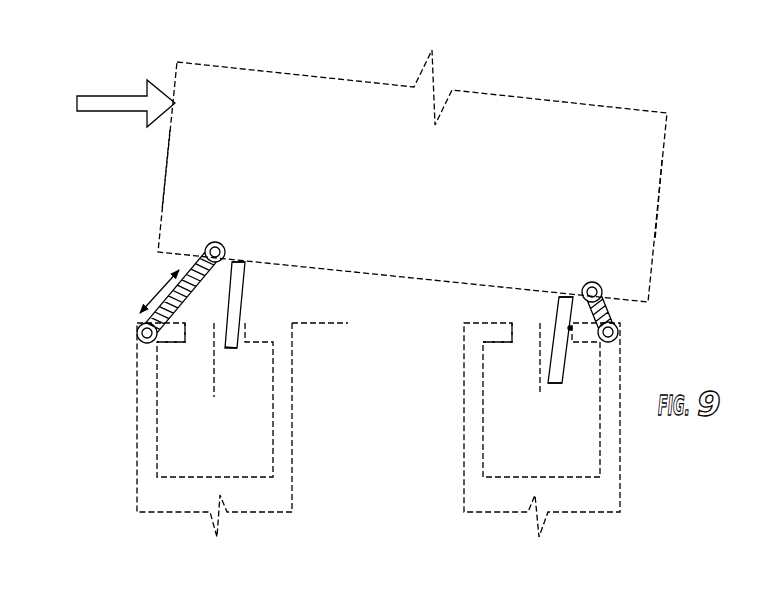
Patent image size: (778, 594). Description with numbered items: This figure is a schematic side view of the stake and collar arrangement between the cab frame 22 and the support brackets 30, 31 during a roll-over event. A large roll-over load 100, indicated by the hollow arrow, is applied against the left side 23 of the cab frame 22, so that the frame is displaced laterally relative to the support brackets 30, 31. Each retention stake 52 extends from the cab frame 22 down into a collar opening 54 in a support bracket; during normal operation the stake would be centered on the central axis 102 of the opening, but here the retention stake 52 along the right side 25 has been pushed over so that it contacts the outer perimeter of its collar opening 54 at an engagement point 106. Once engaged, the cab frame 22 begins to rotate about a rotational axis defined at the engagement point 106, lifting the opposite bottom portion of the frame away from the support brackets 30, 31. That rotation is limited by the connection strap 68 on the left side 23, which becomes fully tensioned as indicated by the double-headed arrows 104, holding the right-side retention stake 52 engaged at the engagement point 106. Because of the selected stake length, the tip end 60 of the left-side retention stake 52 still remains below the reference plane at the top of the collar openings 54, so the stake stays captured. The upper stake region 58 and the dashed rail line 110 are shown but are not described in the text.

The roll-over load 100 is at (114, 100).
The cab frame 22 is at (416, 195).
The left side of the cab frame 23 is at (162, 193).
The right side of the cab frame 25 is at (658, 203).
The connection strap 68 is at (201, 250).
The retention stake 52 is at (250, 300).
The upper end of bar 58 is at (243, 262).
The tip end 60 is at (232, 352).
The arrows indicating strap tension 104 is at (155, 293).
The support bracket 30 is at (133, 445).
The support bracket 31 is at (627, 457).
The collar opening 54 is at (200, 340).
The central axis of the collar opening 102 is at (212, 377).
The rail 110 is at (315, 325).
The engagement point 106 is at (570, 328).